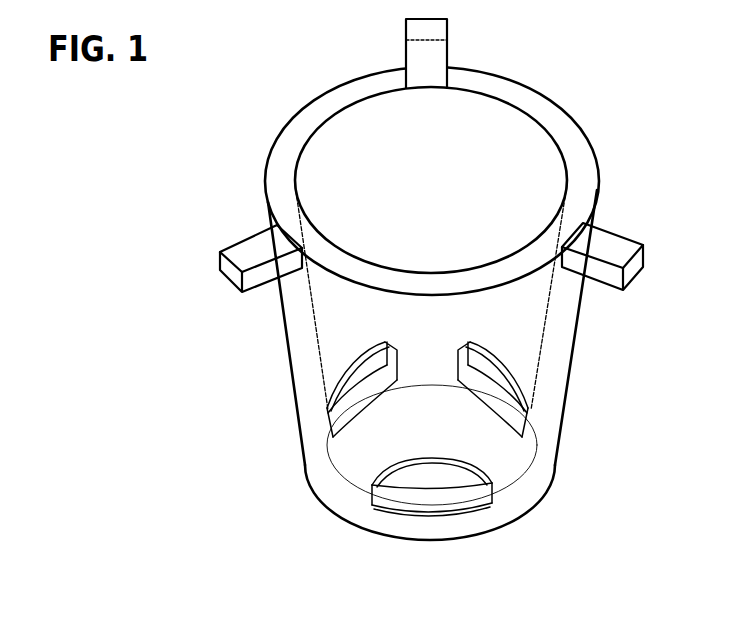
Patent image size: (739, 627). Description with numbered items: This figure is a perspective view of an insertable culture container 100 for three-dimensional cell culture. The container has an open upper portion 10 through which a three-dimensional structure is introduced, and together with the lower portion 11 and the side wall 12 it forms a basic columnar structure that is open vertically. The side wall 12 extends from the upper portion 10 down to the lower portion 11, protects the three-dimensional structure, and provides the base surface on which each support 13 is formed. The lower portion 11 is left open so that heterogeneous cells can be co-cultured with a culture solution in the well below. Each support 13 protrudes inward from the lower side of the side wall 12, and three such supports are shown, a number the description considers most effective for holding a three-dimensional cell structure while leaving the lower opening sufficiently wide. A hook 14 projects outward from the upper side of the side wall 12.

The insertable culture container 100 is at (208, 552).
The upper portion 10 is at (280, 169).
The hook 14 is at (238, 247).
The side wall 12 is at (298, 347).
The lower portion 11 is at (352, 510).
The support 13 is at (432, 508).